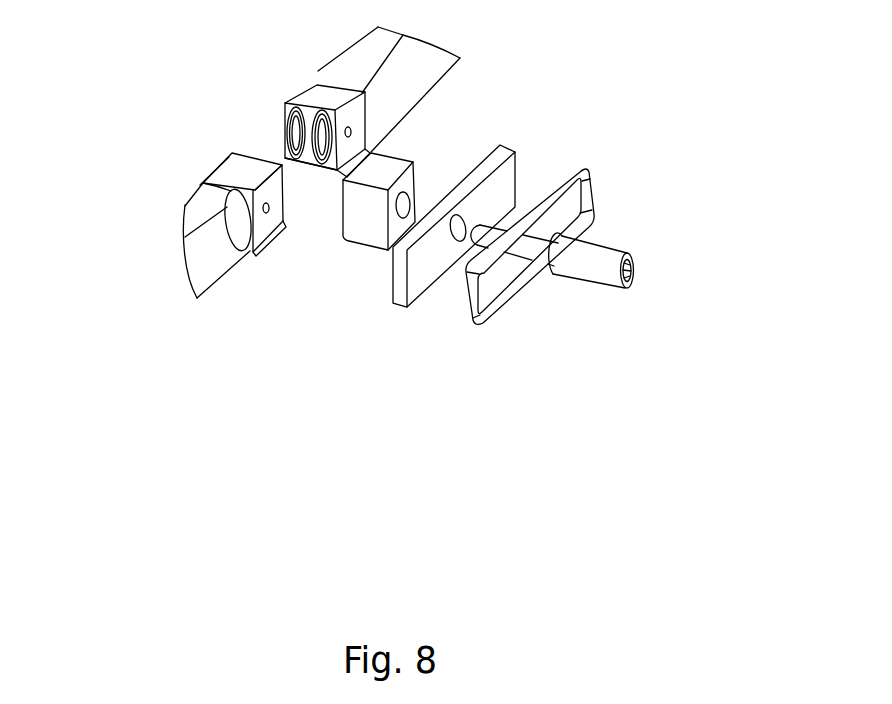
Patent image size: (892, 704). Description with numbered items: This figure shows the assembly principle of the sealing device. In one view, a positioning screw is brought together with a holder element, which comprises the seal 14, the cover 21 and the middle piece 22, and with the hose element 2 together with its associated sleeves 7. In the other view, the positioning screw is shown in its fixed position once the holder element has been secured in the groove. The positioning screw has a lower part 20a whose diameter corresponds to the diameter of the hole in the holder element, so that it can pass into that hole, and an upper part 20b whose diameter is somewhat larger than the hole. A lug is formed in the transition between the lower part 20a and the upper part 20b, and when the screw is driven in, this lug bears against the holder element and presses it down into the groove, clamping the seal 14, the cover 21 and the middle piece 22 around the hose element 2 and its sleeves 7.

The hose element 2 is at (185, 205).
The sleeves 7 is at (315, 92).
The seal 14 is at (587, 170).
The lower part 20a is at (515, 255).
The upper part 20b is at (598, 255).
The cover 21 is at (500, 182).
The middle piece 22 is at (393, 153).